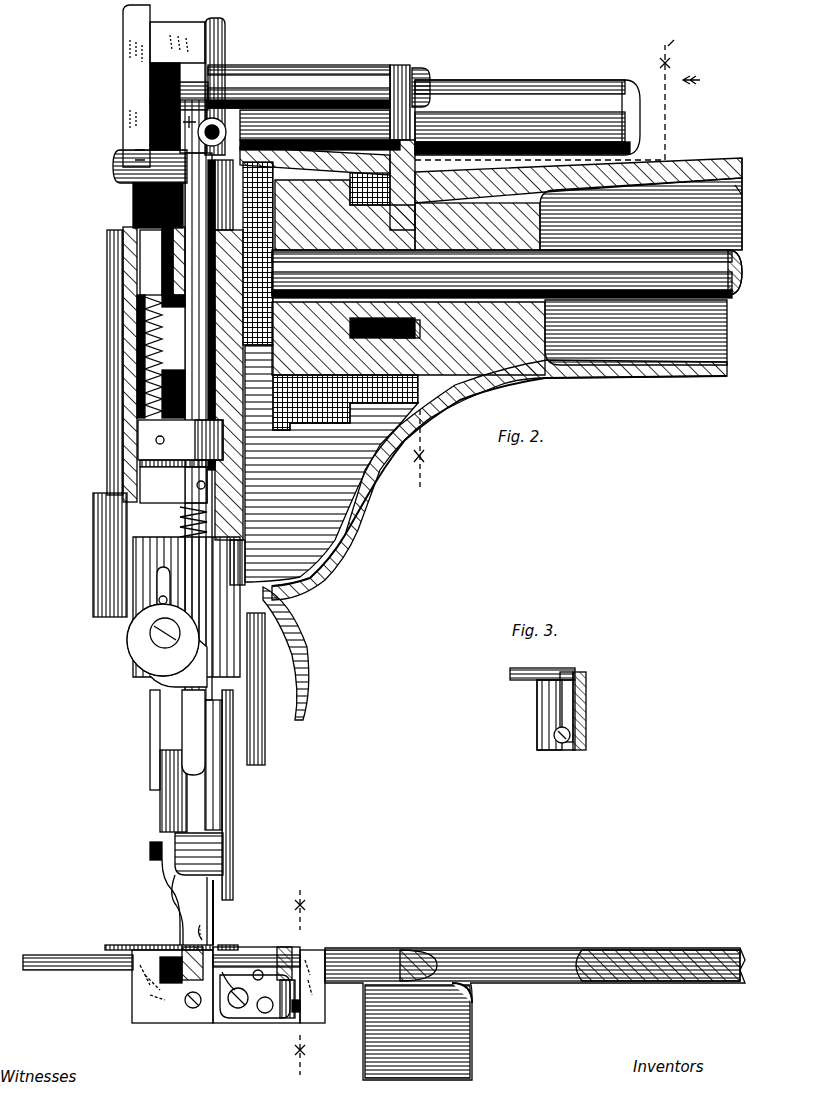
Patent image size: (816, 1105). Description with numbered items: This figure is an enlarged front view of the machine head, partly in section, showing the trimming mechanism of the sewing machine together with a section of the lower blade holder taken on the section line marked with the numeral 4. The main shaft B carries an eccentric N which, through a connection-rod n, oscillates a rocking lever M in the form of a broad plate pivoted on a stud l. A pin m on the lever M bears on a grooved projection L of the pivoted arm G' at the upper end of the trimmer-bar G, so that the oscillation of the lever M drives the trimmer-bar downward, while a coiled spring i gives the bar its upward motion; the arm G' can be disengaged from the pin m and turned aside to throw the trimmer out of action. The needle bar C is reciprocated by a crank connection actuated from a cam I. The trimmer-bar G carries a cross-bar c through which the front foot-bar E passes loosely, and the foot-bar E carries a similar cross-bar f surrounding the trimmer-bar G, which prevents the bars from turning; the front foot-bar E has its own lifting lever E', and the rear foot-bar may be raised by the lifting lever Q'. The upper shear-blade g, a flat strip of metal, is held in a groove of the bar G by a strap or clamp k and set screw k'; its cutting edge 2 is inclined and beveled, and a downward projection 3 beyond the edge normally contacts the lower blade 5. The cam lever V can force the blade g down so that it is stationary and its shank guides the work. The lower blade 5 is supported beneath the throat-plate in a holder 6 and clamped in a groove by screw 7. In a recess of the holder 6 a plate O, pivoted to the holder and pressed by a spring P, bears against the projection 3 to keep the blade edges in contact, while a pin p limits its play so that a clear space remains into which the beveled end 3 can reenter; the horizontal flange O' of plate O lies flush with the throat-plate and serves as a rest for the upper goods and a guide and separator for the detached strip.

In FIG. 2, the pivoted arm G' is at (123, 86).
In FIG. 2, the projection L is at (173, 42).
In FIG. 2, the needle bar C is at (225, 42).
In FIG. 2, the pin m is at (187, 96).
In FIG. 2, the rocking lever M is at (299, 86).
In FIG. 2, the connection-rod n is at (410, 102).
In FIG. 2, the stud l is at (622, 88).
In FIG. 2, the trimmer-bar G is at (200, 426).
In FIG. 2, the front foot-bar E is at (140, 529).
In FIG. 2, the cross-bar f is at (180, 443).
In FIG. 2, the cross-bar c is at (173, 502).
In FIG. 2, the coiled spring i is at (190, 555).
In FIG. 2, the lifting lever E' is at (167, 689).
In FIG. 2, the lifting lever Q' is at (307, 653).
In FIG. 2, the cam lever V is at (265, 738).
In FIG. 2, the strap or clamp k is at (199, 854).
In FIG. 2, the set screw k' is at (152, 893).
In FIG. 2, the upper or movable shear-blade g is at (215, 902).
In FIG. 2, the downward projection 3 is at (212, 935).
In FIG. 2, the section line 4 is at (424, 448).
In FIG. 2, the main shaft B is at (507, 273).
In FIG. 2, the cam I is at (408, 366).
In FIG. 2, the eccentric N is at (418, 328).
In FIG. 2, the holder 6 is at (158, 1023).
In FIG. 3, the holder 6 is at (586, 727).
In FIG. 2, the screw 7 is at (188, 1004).
In FIG. 2, the horizontal flange O' is at (256, 976).
In FIG. 3, the horizontal flange O' is at (529, 676).
In FIG. 2, the lower blade 5 is at (228, 978).
In FIG. 3, the lower blade 5 is at (556, 715).
In FIG. 2, the pin p is at (250, 987).
In FIG. 2, the plate O is at (271, 1005).
In FIG. 2, the spring P is at (290, 1000).
In FIG. 3, the spring P is at (585, 690).
In FIG. 2, the cutting edge 2 is at (520, 985).